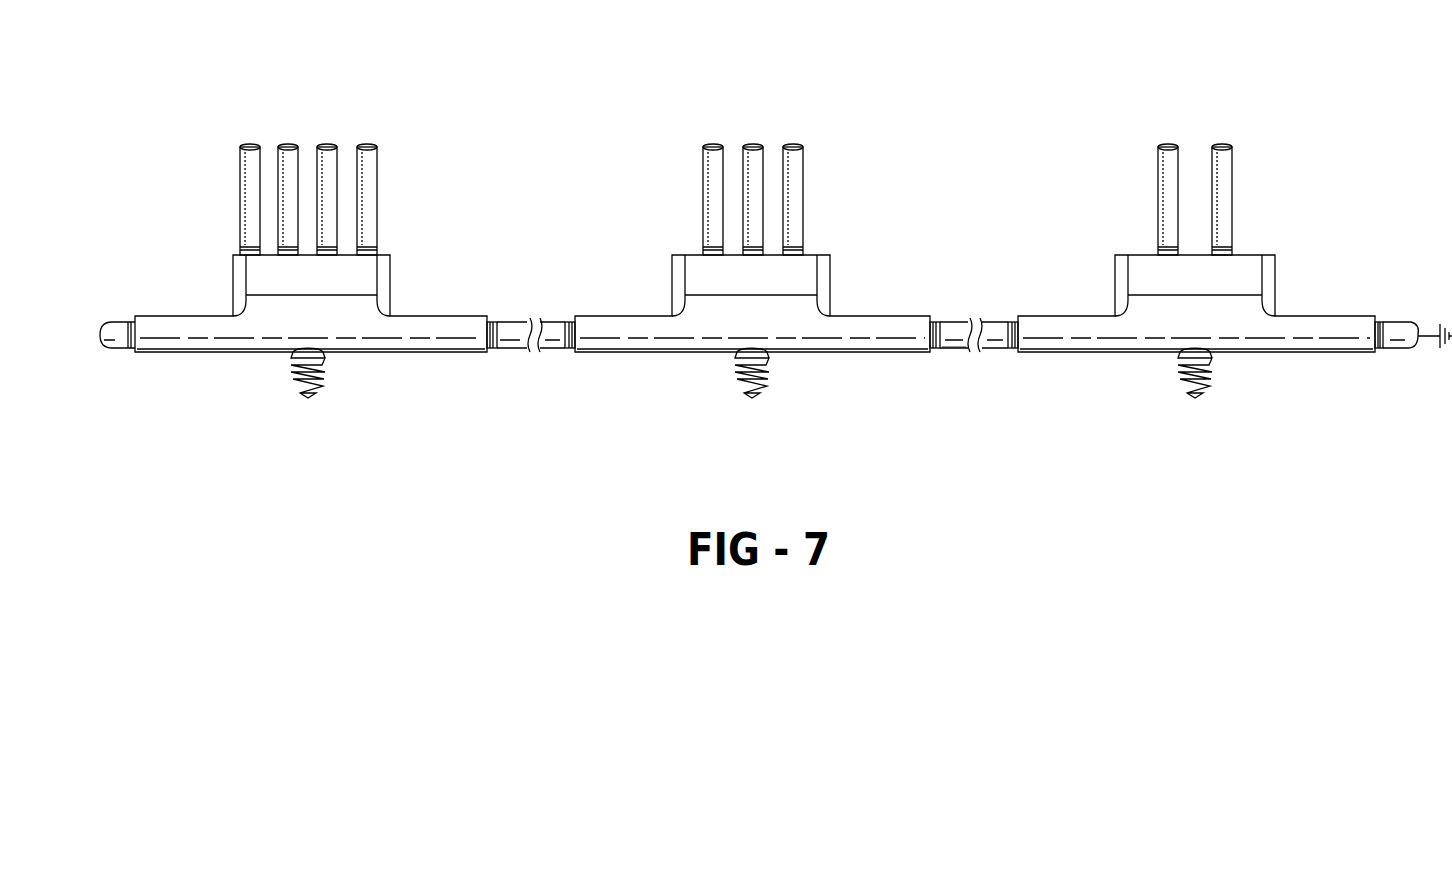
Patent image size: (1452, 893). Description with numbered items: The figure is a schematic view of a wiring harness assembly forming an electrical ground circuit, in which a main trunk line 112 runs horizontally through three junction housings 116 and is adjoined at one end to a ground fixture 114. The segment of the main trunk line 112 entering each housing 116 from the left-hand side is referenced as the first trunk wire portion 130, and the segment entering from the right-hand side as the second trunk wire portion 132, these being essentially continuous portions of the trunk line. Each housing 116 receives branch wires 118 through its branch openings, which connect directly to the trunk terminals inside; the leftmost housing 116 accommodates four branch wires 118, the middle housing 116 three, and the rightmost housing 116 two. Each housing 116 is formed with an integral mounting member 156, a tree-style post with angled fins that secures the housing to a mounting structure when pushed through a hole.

The main trunk line 112 is at (957, 352).
The ground fixture 114 is at (1438, 333).
The housing 116 is at (414, 316).
The branch wires 118 is at (288, 147).
The first trunk wire portion 130 is at (110, 322).
The second trunk wire portion 132 is at (494, 356).
The mounting member 156 is at (297, 374).